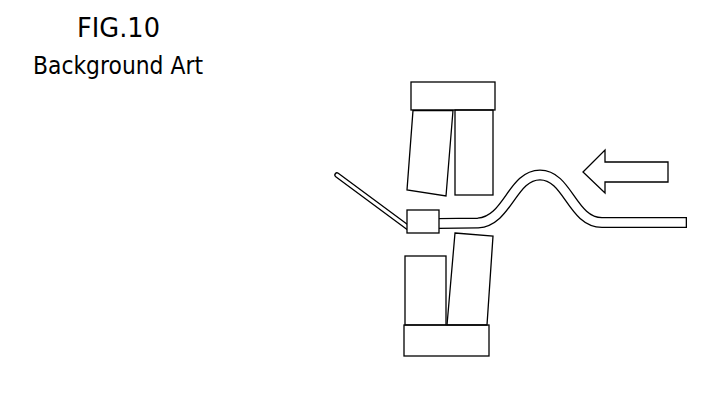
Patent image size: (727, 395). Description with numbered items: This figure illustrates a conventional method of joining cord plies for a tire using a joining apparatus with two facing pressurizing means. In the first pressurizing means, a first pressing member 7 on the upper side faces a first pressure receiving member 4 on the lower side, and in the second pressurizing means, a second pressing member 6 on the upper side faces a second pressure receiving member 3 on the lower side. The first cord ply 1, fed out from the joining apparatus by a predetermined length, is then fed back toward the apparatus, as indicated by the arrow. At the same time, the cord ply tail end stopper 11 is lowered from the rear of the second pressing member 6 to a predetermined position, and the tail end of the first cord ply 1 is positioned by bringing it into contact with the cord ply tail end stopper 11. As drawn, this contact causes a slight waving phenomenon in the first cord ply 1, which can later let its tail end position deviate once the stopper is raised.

The first cord ply 1 is at (636, 223).
The second pressure receiving member 3 is at (415, 292).
The first pressure receiving member 4 is at (482, 272).
The second pressing member 6 is at (425, 146).
The first pressing member 7 is at (487, 149).
The cord ply tail end stopper 11 is at (368, 200).